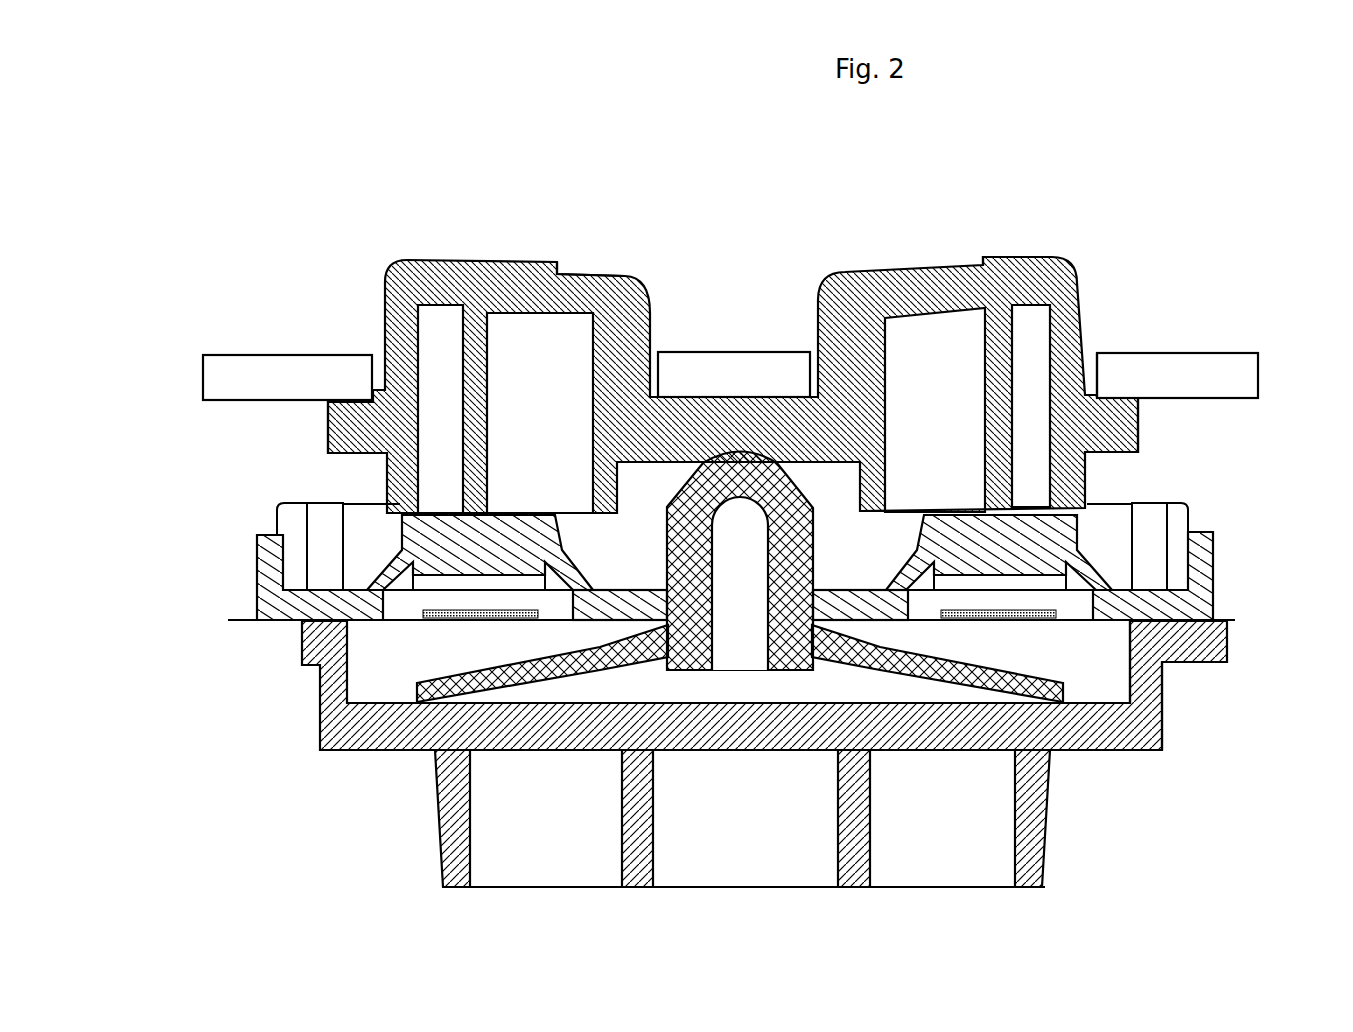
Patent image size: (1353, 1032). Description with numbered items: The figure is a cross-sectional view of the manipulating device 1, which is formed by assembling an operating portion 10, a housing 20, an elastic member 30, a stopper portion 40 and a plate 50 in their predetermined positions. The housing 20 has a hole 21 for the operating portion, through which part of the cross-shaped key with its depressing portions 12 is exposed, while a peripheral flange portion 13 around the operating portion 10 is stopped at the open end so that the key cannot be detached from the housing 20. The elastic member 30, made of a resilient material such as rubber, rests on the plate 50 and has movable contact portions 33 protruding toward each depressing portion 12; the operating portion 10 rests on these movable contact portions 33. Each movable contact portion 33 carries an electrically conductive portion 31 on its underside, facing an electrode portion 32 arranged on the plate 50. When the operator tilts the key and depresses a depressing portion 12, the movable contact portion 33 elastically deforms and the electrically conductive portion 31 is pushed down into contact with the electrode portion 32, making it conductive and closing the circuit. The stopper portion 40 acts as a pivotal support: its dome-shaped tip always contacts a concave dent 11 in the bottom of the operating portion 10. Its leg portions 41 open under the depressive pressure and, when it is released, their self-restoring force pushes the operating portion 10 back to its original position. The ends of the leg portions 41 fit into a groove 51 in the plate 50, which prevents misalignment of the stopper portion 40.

The manipulating device 1 is at (1186, 189).
The operating portion 10 is at (400, 262).
The dent 11 is at (697, 452).
The depressing portion 12 is at (557, 272).
The flange portion 13 is at (340, 432).
The housing 20 is at (233, 354).
The hole for the operating portion 21 is at (1097, 367).
The elastic member 30 is at (257, 573).
The electrically conductive portion 31 is at (420, 593).
The electrode portion 32 is at (450, 620).
The movable contact portion 33 is at (395, 545).
The stopper portion 40 is at (690, 660).
The leg portion 41 is at (537, 703).
The plate 50 is at (1162, 678).
The groove 51 is at (1107, 643).